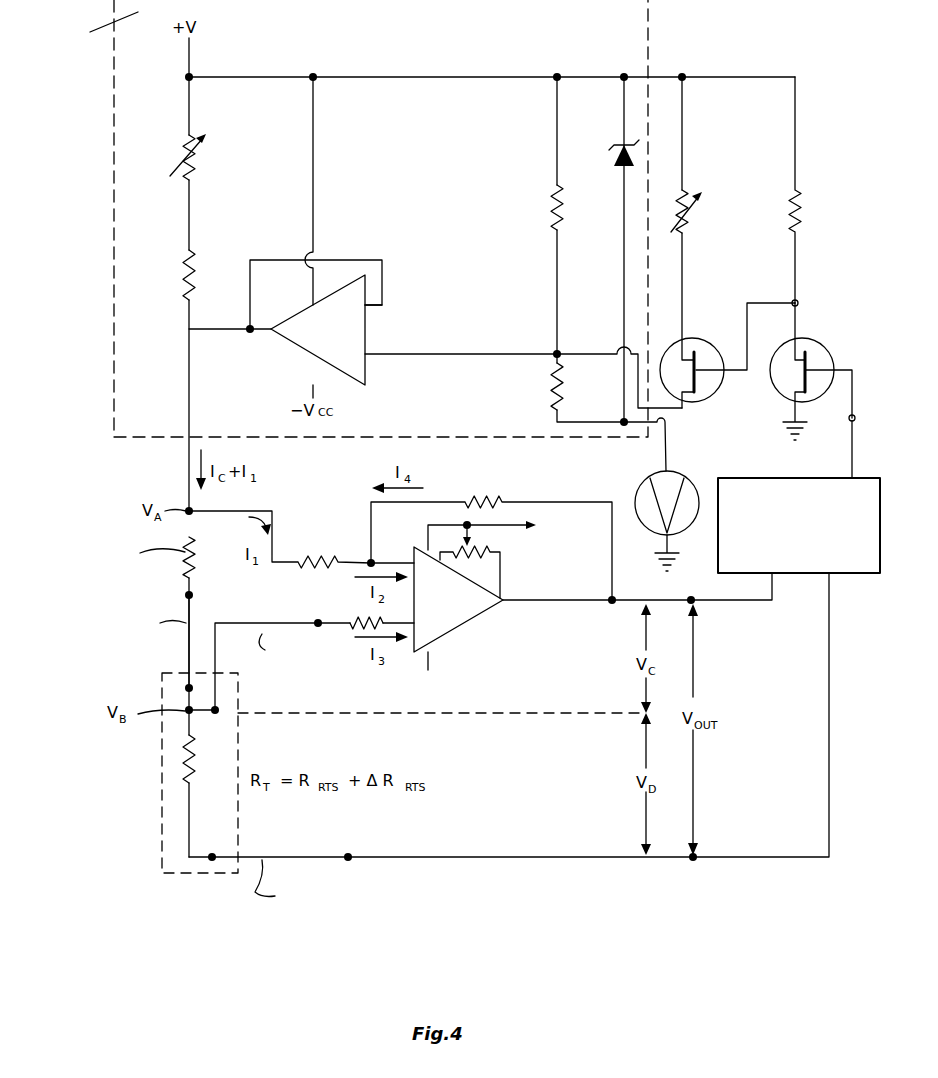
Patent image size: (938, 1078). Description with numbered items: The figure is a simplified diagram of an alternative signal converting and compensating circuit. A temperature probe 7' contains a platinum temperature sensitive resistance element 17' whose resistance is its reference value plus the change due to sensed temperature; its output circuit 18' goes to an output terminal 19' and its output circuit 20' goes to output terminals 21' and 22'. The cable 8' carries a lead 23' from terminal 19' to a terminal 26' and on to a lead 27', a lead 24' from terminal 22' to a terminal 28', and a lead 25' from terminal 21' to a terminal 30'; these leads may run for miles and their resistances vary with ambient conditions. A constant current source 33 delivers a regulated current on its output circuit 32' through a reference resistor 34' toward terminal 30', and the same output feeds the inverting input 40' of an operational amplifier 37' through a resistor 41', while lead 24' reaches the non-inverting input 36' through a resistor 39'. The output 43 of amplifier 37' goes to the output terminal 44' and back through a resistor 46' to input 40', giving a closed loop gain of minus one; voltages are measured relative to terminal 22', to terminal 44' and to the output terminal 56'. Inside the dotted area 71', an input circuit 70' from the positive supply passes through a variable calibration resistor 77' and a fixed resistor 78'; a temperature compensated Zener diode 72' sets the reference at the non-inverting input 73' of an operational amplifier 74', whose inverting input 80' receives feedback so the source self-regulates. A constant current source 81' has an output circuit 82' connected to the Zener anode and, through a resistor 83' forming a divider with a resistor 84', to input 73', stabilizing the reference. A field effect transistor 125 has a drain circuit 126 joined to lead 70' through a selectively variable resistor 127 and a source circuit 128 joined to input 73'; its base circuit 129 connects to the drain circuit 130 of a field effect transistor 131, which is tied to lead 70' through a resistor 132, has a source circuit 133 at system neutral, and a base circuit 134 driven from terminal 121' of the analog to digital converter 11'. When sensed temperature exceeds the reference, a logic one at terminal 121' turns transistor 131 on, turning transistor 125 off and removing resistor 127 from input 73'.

The dotted area 71' is at (97, 24).
The input circuit 70' is at (490, 59).
The variable calibration resistor 77' is at (208, 157).
The fixed resistor 78' is at (212, 264).
The constant current source 33 is at (100, 188).
The operational amplifier 74' is at (285, 322).
The inverting input 80' is at (395, 301).
The non-inverting input 73' is at (523, 365).
The resistor 84' is at (531, 207).
The temperature compensated Zener diode 72' is at (611, 249).
The selectively variable resistor 127 is at (688, 225).
The resistor 132 is at (802, 210).
The drain circuit 126 is at (682, 325).
The base circuit 129 is at (745, 352).
The drain circuit 130 is at (797, 320).
The field effect transistor 131 is at (830, 352).
The base circuit 134 is at (845, 367).
The field effect transistor 125 is at (712, 383).
The source circuit 128 is at (685, 410).
The source circuit 133 is at (800, 418).
The terminal 121' is at (879, 443).
The resistor 83' is at (531, 386).
The output circuit 82' is at (690, 443).
The constant current source 81' is at (680, 512).
The analog to digital converter 11' is at (806, 542).
The output circuit 32' is at (157, 467).
The reference resistor 34' is at (162, 548).
The terminal 30' is at (217, 587).
The lead 25' is at (173, 641).
The lead 24' is at (282, 642).
The terminal 28' is at (312, 606).
The resistor 41' is at (280, 539).
The inverting input 40' is at (392, 545).
The resistor 39' is at (360, 613).
The non-inverting input 36' is at (398, 615).
The resistor 46' is at (489, 527).
The operational amplifier 37' is at (488, 605).
The output 43 is at (548, 604).
The output terminal 44' is at (721, 613).
The cable 8' is at (143, 655).
The output terminal 21' is at (157, 680).
The output terminal 22' is at (211, 732).
The output circuit 20' is at (146, 741).
The temperature sensitive resistance element 17' is at (211, 759).
The output circuit 18' is at (214, 800).
The output terminal 19' is at (219, 838).
The lead 23' is at (292, 862).
The terminal 26' is at (366, 839).
The lead 27' is at (509, 715).
The temperature probe 7' is at (200, 792).
The output terminal 56' is at (714, 876).